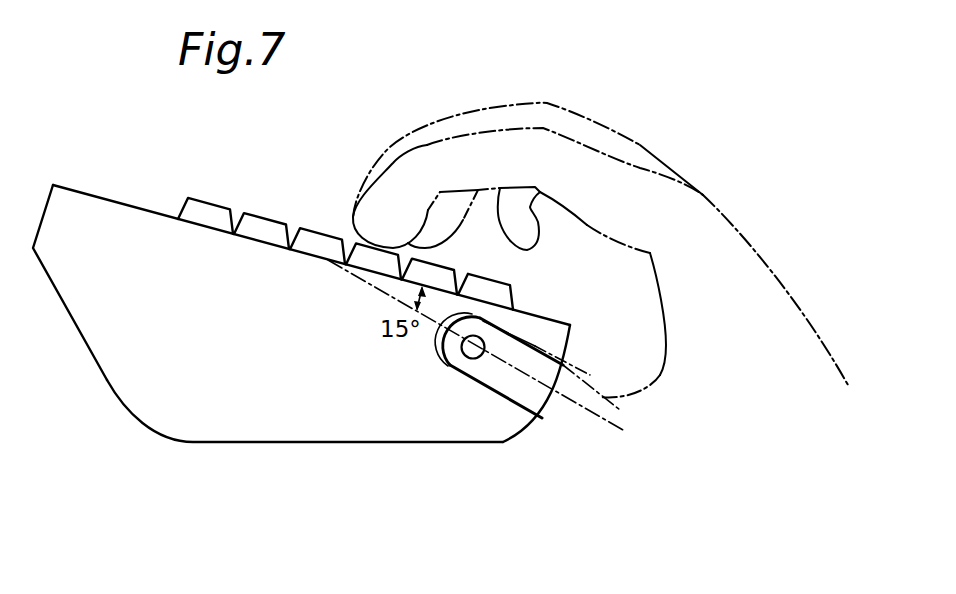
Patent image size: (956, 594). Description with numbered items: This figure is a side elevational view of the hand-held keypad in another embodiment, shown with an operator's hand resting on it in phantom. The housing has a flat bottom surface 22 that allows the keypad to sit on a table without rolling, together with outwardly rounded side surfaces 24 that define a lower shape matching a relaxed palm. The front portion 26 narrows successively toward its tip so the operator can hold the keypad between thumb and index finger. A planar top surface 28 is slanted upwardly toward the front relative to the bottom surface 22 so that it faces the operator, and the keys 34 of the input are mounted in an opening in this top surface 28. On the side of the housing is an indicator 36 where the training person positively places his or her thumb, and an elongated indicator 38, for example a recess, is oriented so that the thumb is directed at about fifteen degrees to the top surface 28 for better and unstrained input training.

The bottom surface 22 is at (297, 323).
The side surfaces 24 is at (235, 377).
The front portion 26 is at (60, 295).
The top surface 28 is at (132, 207).
The keys 34 is at (214, 200).
The indicator 36 is at (465, 353).
The indicator 38 is at (483, 375).